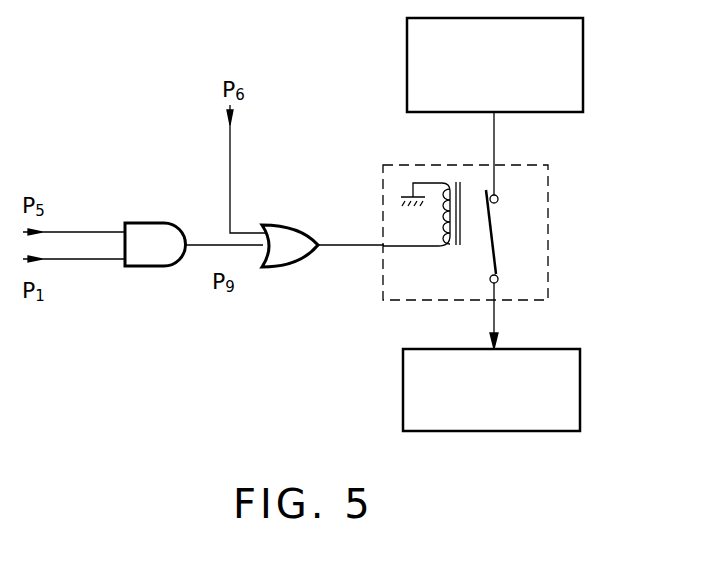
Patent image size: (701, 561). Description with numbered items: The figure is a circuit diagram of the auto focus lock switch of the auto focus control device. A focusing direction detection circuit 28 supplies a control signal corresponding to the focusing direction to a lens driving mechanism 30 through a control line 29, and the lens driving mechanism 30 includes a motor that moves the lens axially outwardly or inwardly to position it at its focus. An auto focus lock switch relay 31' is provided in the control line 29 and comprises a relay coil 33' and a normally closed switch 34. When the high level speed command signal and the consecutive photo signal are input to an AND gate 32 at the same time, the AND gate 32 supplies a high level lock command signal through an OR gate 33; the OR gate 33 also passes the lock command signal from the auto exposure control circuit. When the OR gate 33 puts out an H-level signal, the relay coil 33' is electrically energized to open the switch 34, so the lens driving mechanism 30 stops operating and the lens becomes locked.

The focusing direction detection circuit 28 is at (583, 75).
The control line 29 is at (497, 178).
The lens driving mechanism 30 is at (580, 390).
The auto focus lock switch relay 31' is at (512, 232).
The AND gate 32 is at (155, 266).
The OR gate 33 is at (290, 280).
The relay coil 33' is at (421, 184).
The normally closed switch 34 is at (497, 247).